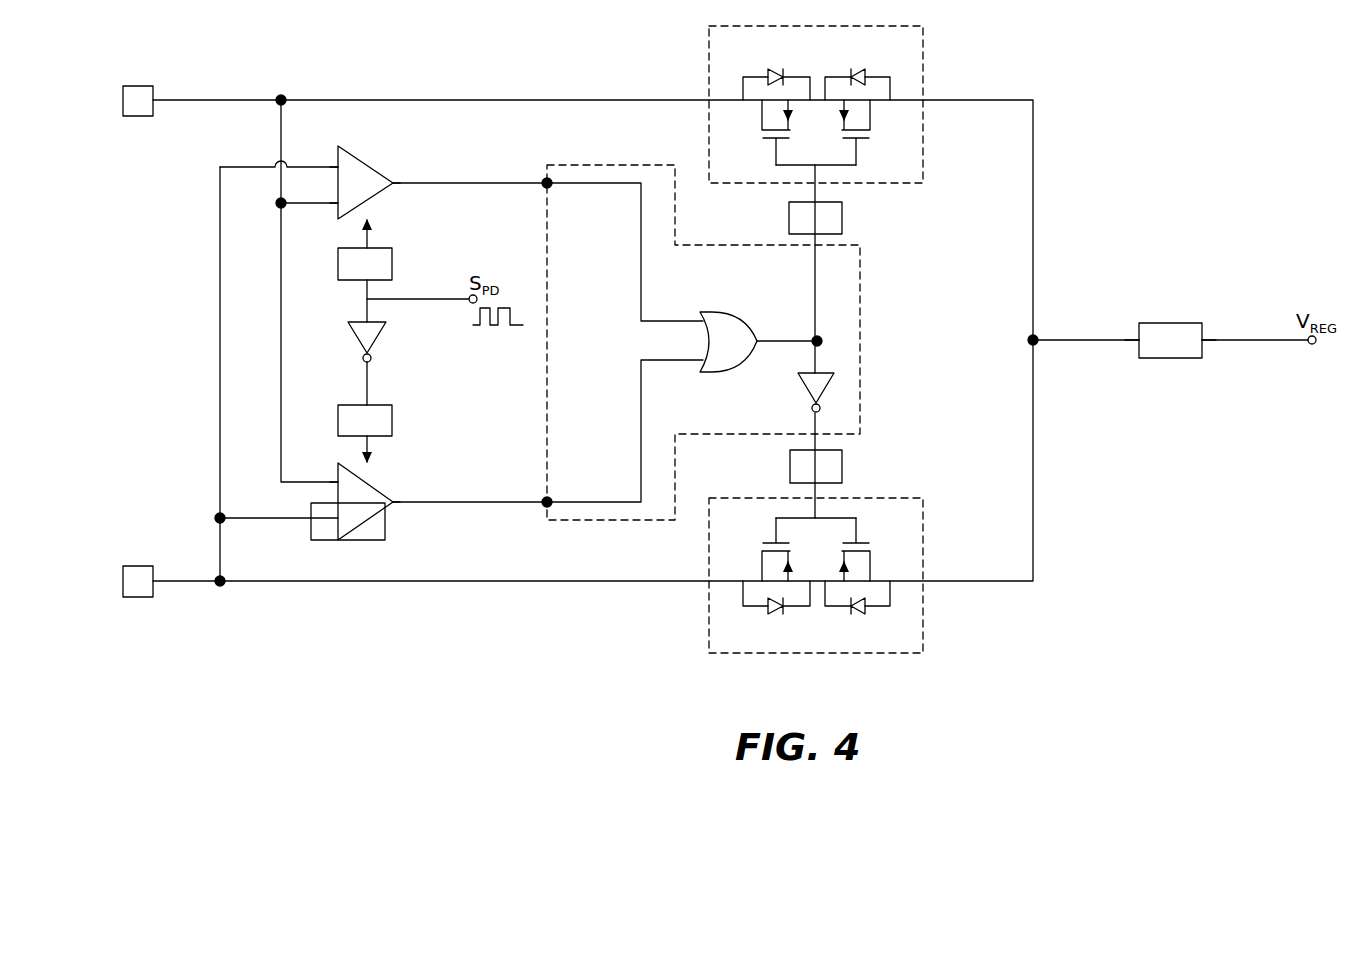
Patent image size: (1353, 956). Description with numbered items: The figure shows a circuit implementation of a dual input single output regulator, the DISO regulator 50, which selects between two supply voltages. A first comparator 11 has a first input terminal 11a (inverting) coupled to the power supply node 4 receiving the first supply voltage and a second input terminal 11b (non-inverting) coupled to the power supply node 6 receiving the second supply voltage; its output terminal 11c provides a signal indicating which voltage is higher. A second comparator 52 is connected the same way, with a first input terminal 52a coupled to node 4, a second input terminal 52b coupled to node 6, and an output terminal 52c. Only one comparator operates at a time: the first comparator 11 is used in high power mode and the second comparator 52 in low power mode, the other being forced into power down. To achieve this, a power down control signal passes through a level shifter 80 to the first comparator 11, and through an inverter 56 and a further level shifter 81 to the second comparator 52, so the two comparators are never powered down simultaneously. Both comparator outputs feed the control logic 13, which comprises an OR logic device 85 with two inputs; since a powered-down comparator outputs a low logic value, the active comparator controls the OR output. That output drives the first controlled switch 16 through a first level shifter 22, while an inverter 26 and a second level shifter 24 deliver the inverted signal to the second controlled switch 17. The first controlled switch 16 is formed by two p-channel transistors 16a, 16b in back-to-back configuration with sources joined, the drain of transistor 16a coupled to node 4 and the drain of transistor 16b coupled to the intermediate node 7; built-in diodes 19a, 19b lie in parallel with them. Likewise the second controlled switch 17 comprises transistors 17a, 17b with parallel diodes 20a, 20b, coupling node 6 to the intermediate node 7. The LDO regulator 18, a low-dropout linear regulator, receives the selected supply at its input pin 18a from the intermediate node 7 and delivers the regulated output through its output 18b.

The DISO regulator 50 is at (445, 55).
The power supply node 4 is at (143, 112).
The power supply node 6 is at (143, 593).
The intermediate node 7 is at (1028, 338).
The first comparator 11 is at (370, 172).
The first input terminal 11a is at (330, 210).
The second input terminal 11b is at (330, 160).
The output terminal 11c is at (404, 175).
The control logic 13 is at (578, 160).
The first controlled switch 16 is at (706, 62).
The transistor 16a is at (765, 138).
The transistor 16b is at (867, 138).
The second controlled switch 17 is at (706, 630).
The transistor 17a is at (765, 550).
The transistor 17b is at (867, 548).
The LDO regulator 18 is at (1197, 322).
The input pin 18a is at (1133, 330).
The LDO output 18b is at (1210, 330).
The diode 19a is at (776, 70).
The diode 19b is at (858, 66).
The diode 20a is at (776, 616).
The diode 20b is at (858, 612).
The first level shifter 22 is at (842, 222).
The second level shifter 24 is at (842, 468).
The inverter 26 is at (808, 380).
The second comparator 52 is at (372, 540).
The first input terminal 52a is at (328, 478).
The second input terminal 52b is at (332, 538).
The output terminal 52c is at (404, 511).
The inverter 56 is at (375, 335).
The level shifter 80 is at (392, 268).
The level shifter 81 is at (392, 426).
The OR logic device 85 is at (728, 325).